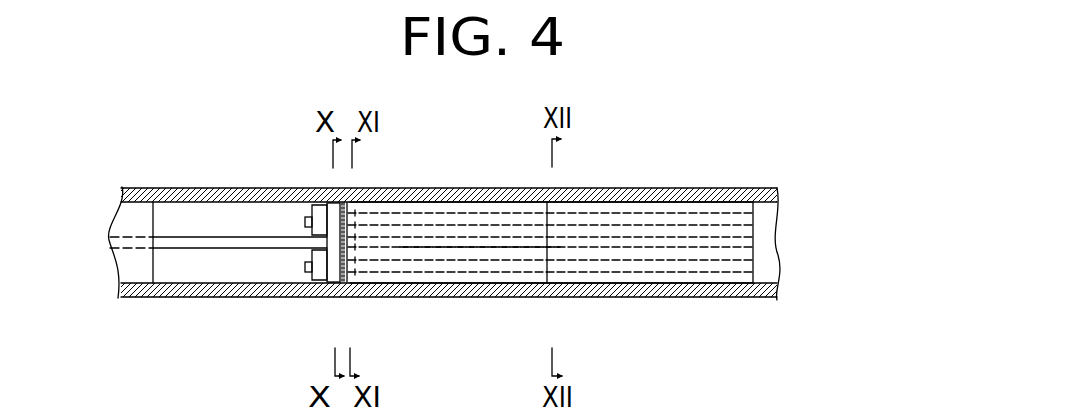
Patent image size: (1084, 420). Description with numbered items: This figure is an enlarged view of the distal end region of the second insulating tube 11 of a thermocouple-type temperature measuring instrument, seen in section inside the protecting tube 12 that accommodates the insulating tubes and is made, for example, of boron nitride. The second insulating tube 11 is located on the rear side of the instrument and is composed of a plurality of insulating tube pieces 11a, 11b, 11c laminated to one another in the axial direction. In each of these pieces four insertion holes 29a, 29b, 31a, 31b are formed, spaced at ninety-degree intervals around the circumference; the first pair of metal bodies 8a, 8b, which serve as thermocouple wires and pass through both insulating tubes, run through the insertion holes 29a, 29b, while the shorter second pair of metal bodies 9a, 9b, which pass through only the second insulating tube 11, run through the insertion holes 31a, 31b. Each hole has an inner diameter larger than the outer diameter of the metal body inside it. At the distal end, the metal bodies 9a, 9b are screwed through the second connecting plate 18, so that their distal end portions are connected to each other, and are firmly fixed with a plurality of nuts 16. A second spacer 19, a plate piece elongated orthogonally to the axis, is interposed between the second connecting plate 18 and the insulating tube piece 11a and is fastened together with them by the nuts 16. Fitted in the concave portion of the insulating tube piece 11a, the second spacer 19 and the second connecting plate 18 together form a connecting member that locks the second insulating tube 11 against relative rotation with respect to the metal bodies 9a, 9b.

The second insulating tube 11 is at (509, 201).
The insulating tube piece 11a is at (445, 189).
The insulating tube piece 11b is at (690, 196).
The insulating tube piece 11c is at (776, 190).
The metal body 9a is at (634, 203).
The metal body 9b is at (636, 283).
The protecting tube 12 is at (152, 298).
The nuts 16 is at (312, 258).
The second connecting plate 18 is at (328, 205).
The second spacer 19 is at (330, 284).
The metal body 8a is at (419, 290).
The metal body 8b is at (419, 290).
The insertion hole 29a is at (476, 242).
The insertion hole 29b is at (476, 242).
The insertion hole 31a is at (583, 214).
The insertion hole 31b is at (586, 262).